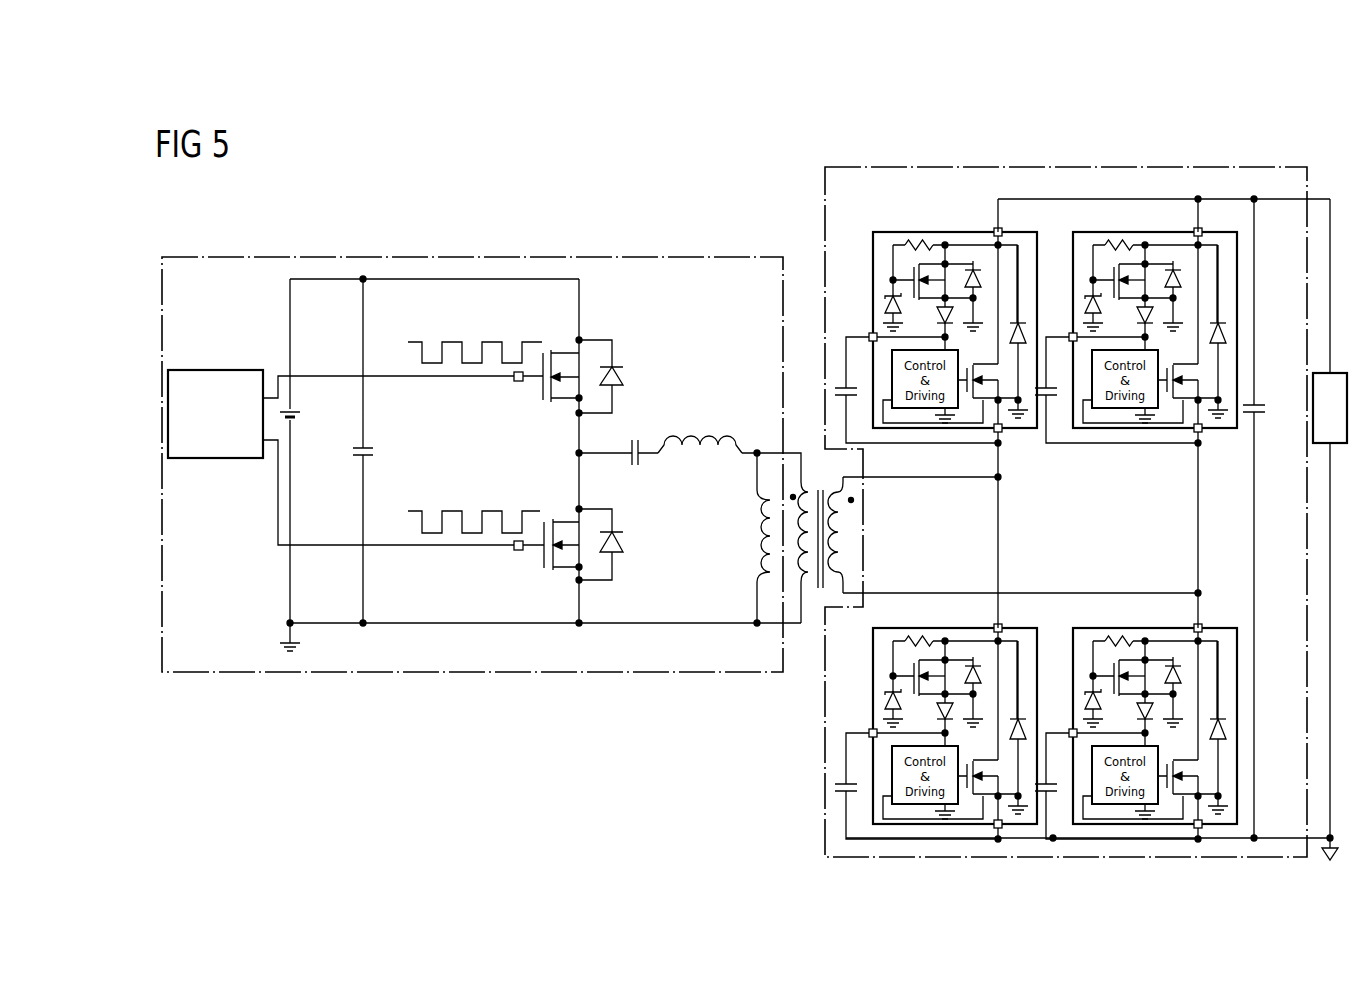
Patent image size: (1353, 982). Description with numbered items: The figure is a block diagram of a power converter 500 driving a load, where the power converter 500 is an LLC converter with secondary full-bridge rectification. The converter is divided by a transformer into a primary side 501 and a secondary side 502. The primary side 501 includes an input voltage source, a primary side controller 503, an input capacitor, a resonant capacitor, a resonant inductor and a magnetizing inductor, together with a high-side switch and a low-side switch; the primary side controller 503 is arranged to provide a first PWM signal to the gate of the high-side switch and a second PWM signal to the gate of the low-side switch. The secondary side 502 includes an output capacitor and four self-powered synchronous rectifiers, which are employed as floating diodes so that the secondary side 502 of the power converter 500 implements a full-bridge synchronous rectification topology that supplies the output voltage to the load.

The power converter 500 is at (664, 188).
The primary side 501 is at (558, 257).
The secondary side 502 is at (825, 210).
The primary side controller 503 is at (215, 368).